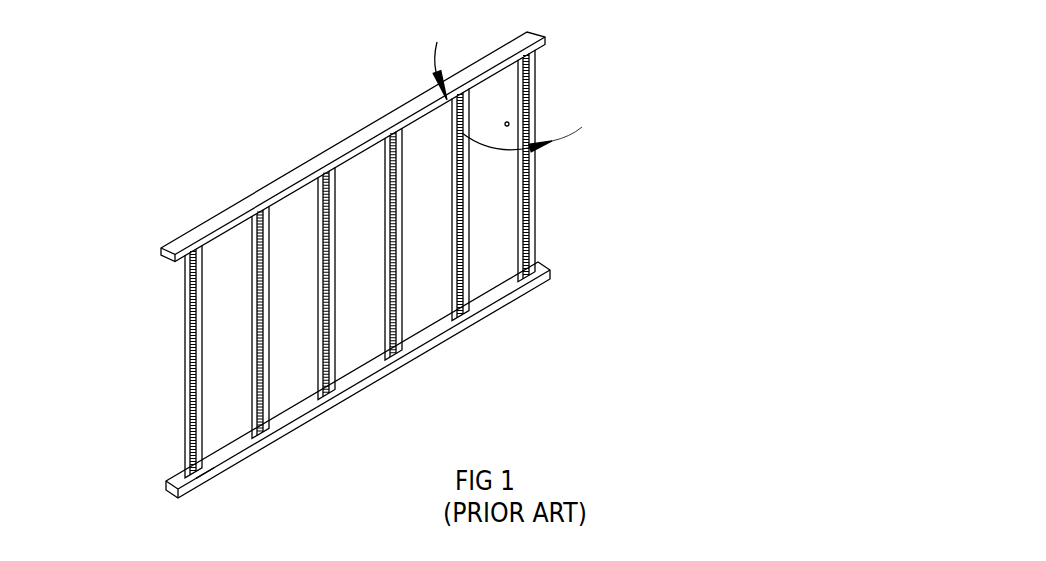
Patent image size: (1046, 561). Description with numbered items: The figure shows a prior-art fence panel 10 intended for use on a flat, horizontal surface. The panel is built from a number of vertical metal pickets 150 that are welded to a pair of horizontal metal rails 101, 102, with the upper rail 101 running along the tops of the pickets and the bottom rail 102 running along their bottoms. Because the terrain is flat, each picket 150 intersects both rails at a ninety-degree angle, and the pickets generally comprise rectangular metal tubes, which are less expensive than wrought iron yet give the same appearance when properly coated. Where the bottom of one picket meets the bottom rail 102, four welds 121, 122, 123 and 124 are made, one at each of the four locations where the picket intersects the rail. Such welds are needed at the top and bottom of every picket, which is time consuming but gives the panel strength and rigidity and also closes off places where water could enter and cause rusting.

The fence panel 10 is at (392, 85).
The horizontal metal rail 101 is at (545, 40).
The bottom rail 102 is at (542, 283).
The vertical metal pickets 150 is at (535, 178).
The weld 121 is at (203, 470).
The weld 122 is at (185, 470).
The weld 123 is at (168, 484).
The weld 124 is at (205, 483).